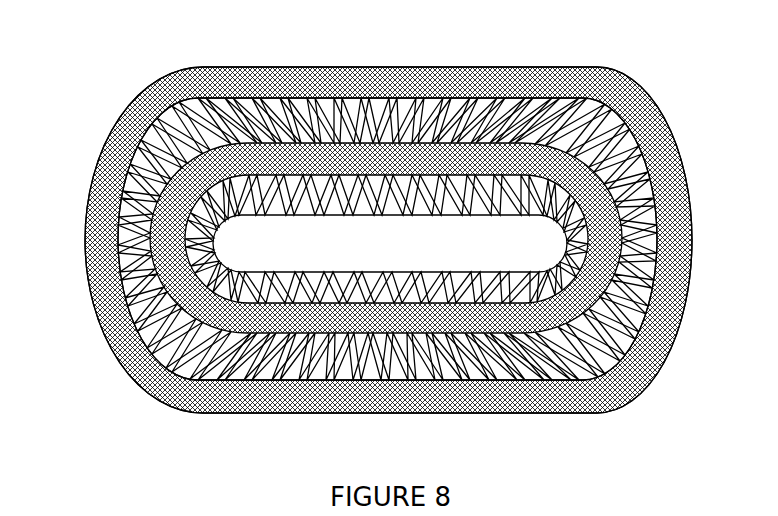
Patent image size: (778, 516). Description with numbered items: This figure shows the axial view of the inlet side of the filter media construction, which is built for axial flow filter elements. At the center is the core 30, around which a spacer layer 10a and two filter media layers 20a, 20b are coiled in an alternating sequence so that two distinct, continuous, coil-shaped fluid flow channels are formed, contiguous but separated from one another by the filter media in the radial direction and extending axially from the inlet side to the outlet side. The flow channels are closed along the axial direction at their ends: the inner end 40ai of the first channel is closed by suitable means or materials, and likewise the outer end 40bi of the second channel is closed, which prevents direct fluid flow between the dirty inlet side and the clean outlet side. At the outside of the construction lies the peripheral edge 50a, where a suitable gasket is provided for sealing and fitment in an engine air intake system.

The spacer layer 10a is at (572, 217).
The filter media layer 20a is at (133, 322).
The filter media layer 20b is at (242, 413).
The core 30 is at (457, 252).
The inner end of flow channel 40ai is at (213, 223).
The outer end of flow channel 40bi is at (250, 70).
The peripheral edge 50a is at (113, 128).